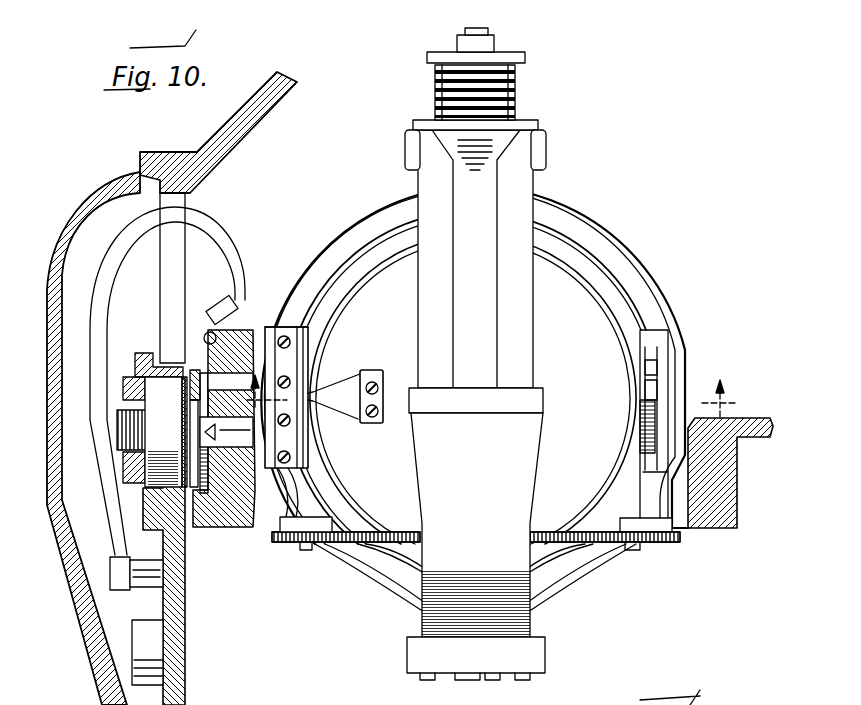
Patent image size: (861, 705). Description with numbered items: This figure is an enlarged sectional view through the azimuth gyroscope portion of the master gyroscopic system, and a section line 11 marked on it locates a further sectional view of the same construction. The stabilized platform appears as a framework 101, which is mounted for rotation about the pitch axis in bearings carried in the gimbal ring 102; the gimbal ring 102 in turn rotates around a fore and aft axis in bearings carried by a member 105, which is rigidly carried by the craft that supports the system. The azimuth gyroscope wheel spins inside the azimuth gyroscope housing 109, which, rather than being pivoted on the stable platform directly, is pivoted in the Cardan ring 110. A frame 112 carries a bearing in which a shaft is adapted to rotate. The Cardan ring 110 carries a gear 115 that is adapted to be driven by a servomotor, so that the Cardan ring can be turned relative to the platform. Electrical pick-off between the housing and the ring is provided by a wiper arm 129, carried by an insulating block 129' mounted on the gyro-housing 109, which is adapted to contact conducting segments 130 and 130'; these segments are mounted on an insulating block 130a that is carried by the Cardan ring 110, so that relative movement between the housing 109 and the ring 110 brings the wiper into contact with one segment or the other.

The section line 11- 11 is at (505, 401).
The framework 101 is at (736, 508).
The gimbal ring 102 is at (237, 527).
The member 105 is at (190, 600).
The azimuth gyroscope housing 109 is at (568, 297).
The Cardan ring 110 is at (570, 228).
The frame 112 is at (520, 200).
The gear 115 is at (275, 543).
The wiper arm 129 is at (340, 374).
The insulating block 129' is at (388, 383).
The conducting segment 130 is at (323, 387).
The conducting segment 130' is at (327, 483).
The insulating block 130a is at (273, 303).